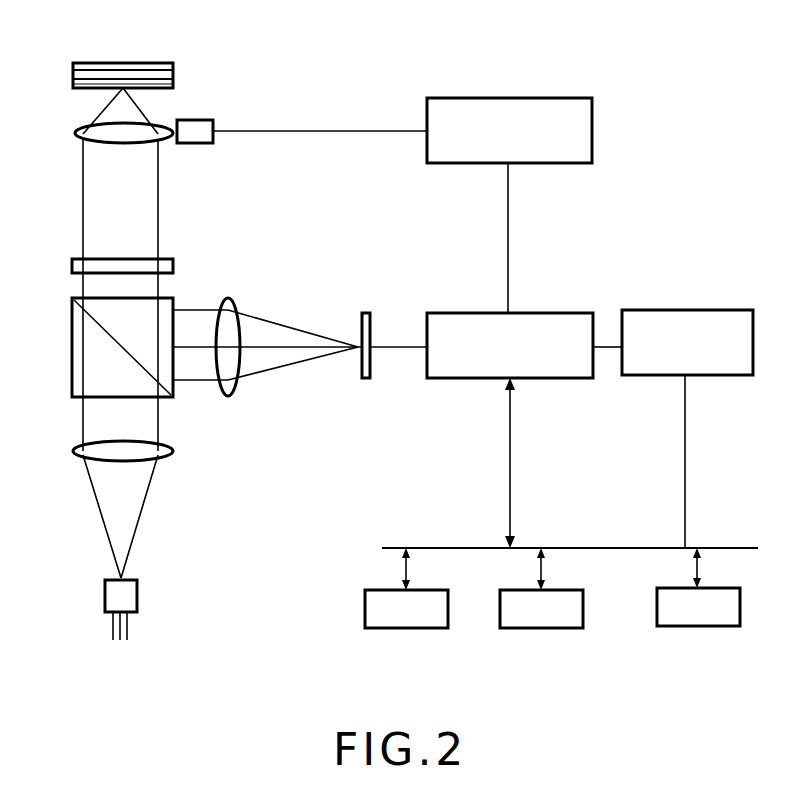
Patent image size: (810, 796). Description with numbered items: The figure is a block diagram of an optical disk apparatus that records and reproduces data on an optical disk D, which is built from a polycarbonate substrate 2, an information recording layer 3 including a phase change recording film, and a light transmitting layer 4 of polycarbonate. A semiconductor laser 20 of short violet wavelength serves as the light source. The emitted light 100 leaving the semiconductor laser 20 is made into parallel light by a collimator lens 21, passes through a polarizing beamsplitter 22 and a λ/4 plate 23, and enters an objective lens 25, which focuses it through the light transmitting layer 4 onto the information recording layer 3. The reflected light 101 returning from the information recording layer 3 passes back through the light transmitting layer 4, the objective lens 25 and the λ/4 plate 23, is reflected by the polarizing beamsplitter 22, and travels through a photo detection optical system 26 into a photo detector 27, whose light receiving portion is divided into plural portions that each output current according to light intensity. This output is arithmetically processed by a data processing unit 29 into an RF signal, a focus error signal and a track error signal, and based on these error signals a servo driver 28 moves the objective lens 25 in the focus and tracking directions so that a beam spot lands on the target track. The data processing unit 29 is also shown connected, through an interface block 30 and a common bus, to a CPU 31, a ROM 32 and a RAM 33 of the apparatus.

The optical disk D is at (182, 66).
The substrate 2 is at (90, 66).
The information recording layer 3 is at (75, 75).
The light transmitting layer 4 is at (75, 84).
The objective lens 25 is at (75, 135).
The λ/4 plate 23 is at (72, 267).
The polarizing beamsplitter 22 is at (72, 345).
The photo detection optical system 26 is at (229, 300).
The photo detector 27 is at (366, 312).
The reflected light 101 is at (192, 384).
The collimator lens 21 is at (74, 451).
The emitted light 100 is at (138, 534).
The semiconductor laser 20 is at (105, 594).
The servo driver 28 is at (592, 123).
The data processing unit 29 is at (560, 313).
The interface (I/F) 30 is at (714, 310).
The CPU 31 is at (700, 626).
The ROM 32 is at (546, 628).
The RAM 33 is at (416, 628).